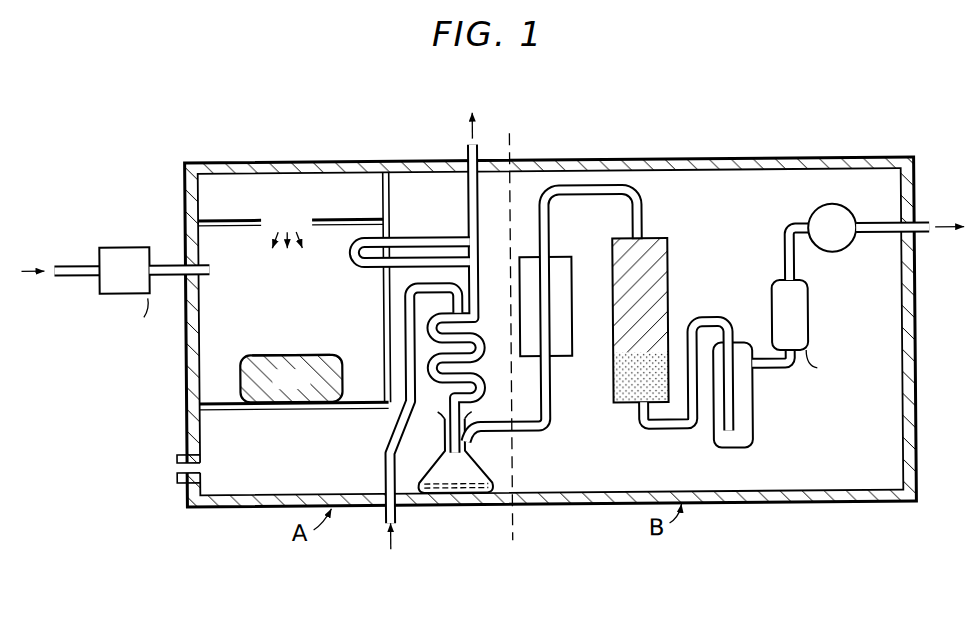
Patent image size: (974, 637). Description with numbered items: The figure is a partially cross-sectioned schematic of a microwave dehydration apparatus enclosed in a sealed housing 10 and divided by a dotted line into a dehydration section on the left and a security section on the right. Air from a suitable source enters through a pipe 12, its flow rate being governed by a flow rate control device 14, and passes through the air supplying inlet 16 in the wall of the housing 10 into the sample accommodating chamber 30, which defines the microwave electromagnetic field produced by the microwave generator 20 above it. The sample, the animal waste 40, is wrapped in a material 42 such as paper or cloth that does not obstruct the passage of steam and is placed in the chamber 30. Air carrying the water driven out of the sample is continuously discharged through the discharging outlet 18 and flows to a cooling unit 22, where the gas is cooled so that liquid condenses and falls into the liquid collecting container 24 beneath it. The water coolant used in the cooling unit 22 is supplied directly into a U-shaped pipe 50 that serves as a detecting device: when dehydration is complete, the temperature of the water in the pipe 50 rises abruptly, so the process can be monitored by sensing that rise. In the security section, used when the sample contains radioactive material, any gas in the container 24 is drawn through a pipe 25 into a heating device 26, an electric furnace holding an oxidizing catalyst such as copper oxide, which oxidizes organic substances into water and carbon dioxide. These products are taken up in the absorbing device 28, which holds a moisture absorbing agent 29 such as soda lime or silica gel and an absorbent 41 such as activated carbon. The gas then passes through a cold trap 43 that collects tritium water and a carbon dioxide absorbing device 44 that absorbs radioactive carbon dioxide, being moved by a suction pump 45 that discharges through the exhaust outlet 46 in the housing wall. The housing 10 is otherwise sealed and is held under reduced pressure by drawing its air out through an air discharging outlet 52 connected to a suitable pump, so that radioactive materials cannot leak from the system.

The housing 10 is at (648, 160).
The pipe 12 is at (69, 262).
The flow rate control device 14 is at (122, 244).
The air supplying inlet 16 is at (190, 265).
The discharging outlet 18 is at (378, 403).
The microwave generator 20 is at (303, 200).
The cooling unit 22 is at (459, 298).
The liquid collecting container 24 is at (481, 468).
The pipe 25 is at (539, 432).
The heating device 26 is at (572, 302).
The absorbing device 28 is at (668, 256).
The moisture absorbing agent 29 is at (660, 290).
The sample accommodating chamber 30 is at (307, 282).
The waste 40 is at (306, 389).
The absorbent 41 is at (615, 380).
The wrapping material 42 is at (290, 352).
The cold trap 43 is at (752, 398).
The carbon dioxide absorbing device 44 is at (808, 314).
The suction pump 45 is at (844, 248).
The exhaust outlet 46 is at (929, 236).
The U-shaped pipe 50 is at (352, 252).
The air discharging outlet 52 is at (182, 465).